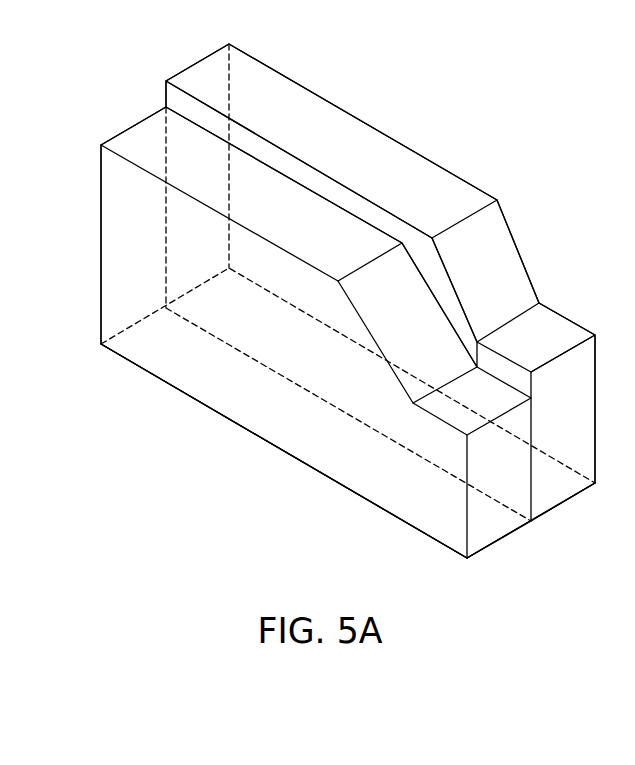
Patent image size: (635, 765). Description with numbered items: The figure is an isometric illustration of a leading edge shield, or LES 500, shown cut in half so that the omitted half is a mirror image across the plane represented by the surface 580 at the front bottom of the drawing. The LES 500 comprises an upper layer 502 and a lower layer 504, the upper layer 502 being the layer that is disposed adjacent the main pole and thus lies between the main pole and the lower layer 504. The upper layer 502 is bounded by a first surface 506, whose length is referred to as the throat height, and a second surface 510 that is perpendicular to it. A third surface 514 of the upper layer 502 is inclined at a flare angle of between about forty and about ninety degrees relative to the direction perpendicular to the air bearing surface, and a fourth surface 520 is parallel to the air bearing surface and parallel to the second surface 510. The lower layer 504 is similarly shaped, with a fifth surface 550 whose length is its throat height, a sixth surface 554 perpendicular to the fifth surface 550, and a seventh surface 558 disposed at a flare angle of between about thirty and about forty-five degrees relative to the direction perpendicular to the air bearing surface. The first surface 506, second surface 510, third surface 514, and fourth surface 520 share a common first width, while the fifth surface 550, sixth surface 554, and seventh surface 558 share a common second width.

The LES 500 is at (408, 102).
The upper layer 502 is at (207, 364).
The lower layer 504 is at (173, 96).
The first surface 506 is at (518, 475).
The second surface 510 is at (497, 411).
The third surface 514 is at (423, 317).
The fourth surface 520 is at (298, 219).
The fifth surface 550 is at (583, 427).
The sixth surface 554 is at (377, 163).
The seventh surface 558 is at (507, 277).
The surface 580 is at (205, 405).